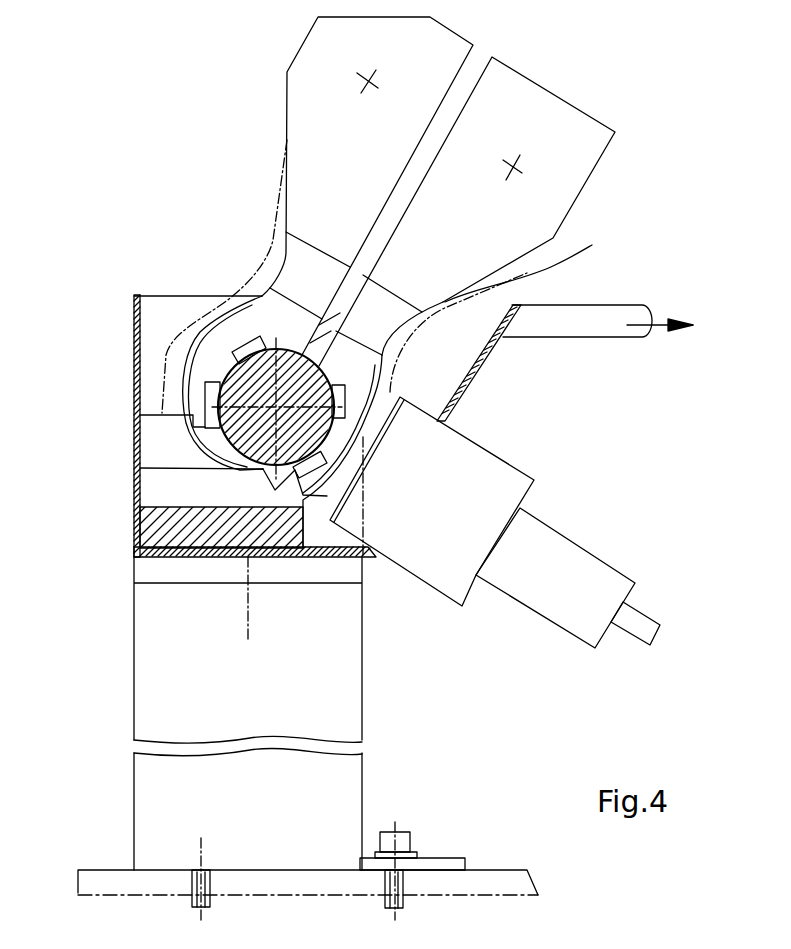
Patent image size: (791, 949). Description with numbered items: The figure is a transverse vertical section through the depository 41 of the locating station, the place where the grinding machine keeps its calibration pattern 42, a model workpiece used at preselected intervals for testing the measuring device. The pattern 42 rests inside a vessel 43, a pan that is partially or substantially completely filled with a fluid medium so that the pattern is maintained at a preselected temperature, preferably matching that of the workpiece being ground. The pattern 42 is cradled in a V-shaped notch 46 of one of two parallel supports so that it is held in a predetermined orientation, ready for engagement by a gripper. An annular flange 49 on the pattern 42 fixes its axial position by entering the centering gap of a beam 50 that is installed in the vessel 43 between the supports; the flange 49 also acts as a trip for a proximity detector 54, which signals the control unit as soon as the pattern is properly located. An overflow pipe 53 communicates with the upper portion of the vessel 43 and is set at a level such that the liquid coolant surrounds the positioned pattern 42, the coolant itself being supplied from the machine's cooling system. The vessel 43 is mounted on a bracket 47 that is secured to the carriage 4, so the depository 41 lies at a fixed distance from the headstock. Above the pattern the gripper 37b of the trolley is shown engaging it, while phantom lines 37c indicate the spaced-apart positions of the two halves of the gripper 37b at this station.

The carriage 4 is at (92, 868).
The depository 41 is at (128, 262).
The gripper 37b is at (220, 337).
The phantom-line gripper positions 37c is at (592, 245).
The pattern 42 is at (360, 392).
The vessel 43 is at (137, 369).
The V-shaped notch 46 is at (262, 494).
The bracket 47 is at (342, 725).
The annular flange 49 is at (197, 440).
The beam 50 is at (281, 534).
The overflow pipe 53 is at (587, 317).
The proximity detector 54 is at (478, 468).